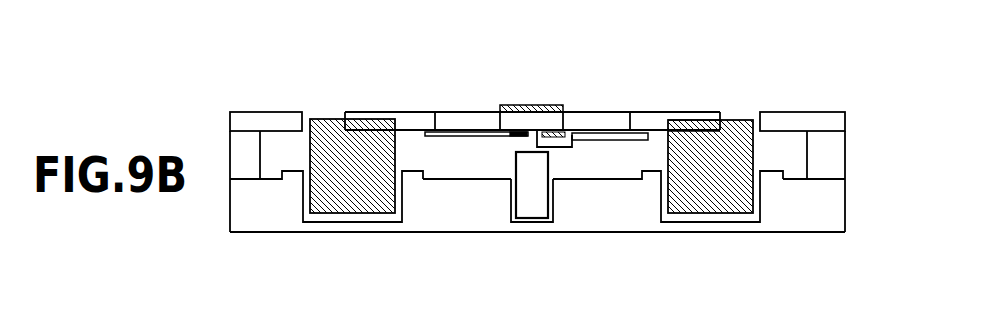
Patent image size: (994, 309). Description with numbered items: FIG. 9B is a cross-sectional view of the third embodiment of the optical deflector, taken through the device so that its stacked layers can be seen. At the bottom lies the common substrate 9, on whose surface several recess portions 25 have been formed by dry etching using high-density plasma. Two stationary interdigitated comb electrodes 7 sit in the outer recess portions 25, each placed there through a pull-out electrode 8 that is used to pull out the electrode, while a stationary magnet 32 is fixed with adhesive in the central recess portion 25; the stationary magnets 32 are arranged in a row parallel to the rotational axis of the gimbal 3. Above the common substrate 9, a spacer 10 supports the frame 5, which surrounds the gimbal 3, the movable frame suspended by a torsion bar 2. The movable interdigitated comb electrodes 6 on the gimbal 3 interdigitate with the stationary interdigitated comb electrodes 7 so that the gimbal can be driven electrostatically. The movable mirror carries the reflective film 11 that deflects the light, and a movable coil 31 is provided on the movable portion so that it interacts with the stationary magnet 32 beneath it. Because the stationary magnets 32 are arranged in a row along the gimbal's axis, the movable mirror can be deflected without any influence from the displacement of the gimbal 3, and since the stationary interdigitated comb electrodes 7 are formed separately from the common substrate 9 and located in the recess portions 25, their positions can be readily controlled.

The torsion bar 2 is at (442, 113).
The gimbal 3 is at (663, 112).
The frame 5 is at (782, 123).
The movable interdigitated comb electrode 6 is at (708, 118).
The stationary interdigitated comb electrode 7 is at (695, 200).
The pull-out electrode 8 is at (295, 180).
The common substrate 9 is at (440, 197).
The spacer 10 is at (832, 172).
The reflective film 11 is at (535, 105).
The recess portion 25 is at (353, 223).
The movable coil 31 is at (515, 133).
The stationary magnet 32 is at (543, 202).